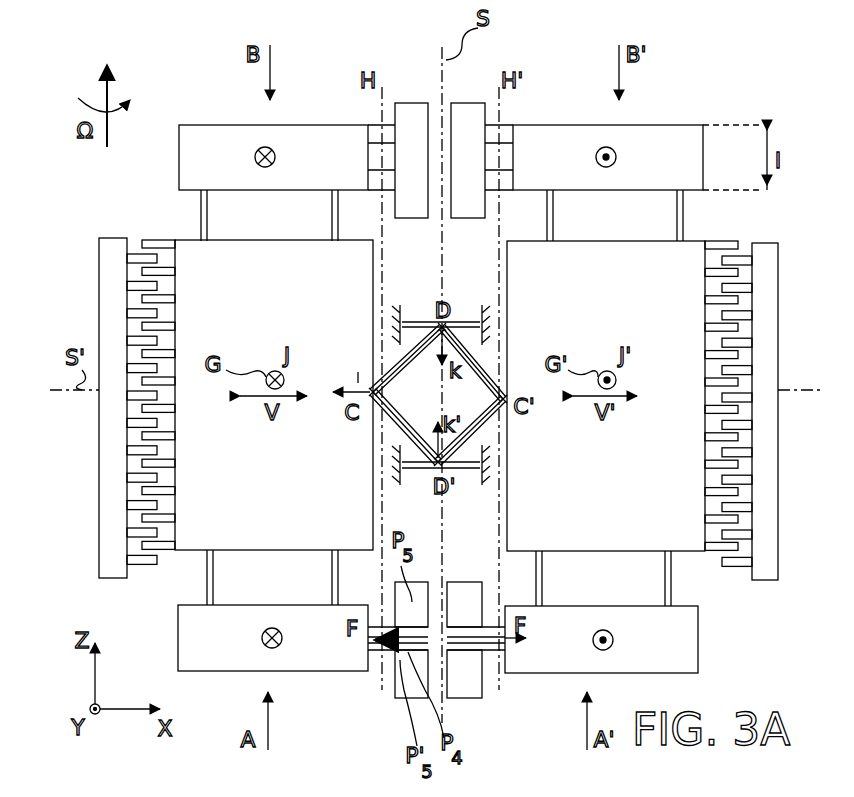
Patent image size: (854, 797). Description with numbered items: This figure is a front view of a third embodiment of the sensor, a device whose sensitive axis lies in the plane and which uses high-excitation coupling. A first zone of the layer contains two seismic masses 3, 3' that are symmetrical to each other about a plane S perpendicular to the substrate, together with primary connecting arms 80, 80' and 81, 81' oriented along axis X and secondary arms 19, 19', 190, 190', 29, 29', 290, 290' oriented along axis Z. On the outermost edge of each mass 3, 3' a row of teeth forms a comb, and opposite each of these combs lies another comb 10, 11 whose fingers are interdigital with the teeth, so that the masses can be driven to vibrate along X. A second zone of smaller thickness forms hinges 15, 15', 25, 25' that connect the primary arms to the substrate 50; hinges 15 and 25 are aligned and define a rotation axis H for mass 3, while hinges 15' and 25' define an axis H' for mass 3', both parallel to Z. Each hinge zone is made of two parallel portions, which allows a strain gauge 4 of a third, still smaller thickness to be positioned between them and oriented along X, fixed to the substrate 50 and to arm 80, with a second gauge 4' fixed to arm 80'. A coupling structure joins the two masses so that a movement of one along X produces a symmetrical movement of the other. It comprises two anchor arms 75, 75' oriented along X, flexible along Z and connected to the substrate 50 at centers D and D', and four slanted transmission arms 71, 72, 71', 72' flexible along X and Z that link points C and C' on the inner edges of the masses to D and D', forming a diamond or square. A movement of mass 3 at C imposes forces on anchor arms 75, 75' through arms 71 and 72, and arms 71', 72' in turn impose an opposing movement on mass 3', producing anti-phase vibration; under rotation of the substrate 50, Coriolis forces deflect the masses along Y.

The seismic mass 3 is at (257, 395).
The seismic mass 3' is at (622, 396).
The strain gauge 4 is at (383, 675).
The strain gauge 4' is at (480, 606).
The comb 10 is at (100, 274).
The comb 11 is at (770, 296).
The hinge 15 is at (353, 157).
The hinge 15' is at (524, 157).
The secondary arm 19 is at (233, 577).
The secondary arm 19' is at (310, 577).
The hinge 25 is at (388, 650).
The hinge 25' is at (485, 653).
The secondary arm 29 is at (563, 578).
The secondary arm 29' is at (642, 578).
The substrate 50 is at (482, 305).
The transmission arm 71 is at (384, 359).
The transmission arm 71' is at (498, 363).
The transmission arm 72 is at (385, 427).
The transmission arm 72' is at (496, 435).
The anchor arm 75 is at (441, 299).
The anchor arm 75' is at (441, 495).
The primary connecting arm 80 is at (243, 638).
The primary connecting arm 80' is at (630, 639).
The primary connecting arm 81 is at (273, 141).
The primary connecting arm 81' is at (632, 157).
The secondary arm 190 is at (231, 215).
The secondary arm 190' is at (303, 215).
The secondary arm 290 is at (578, 215).
The secondary arm 290' is at (650, 215).